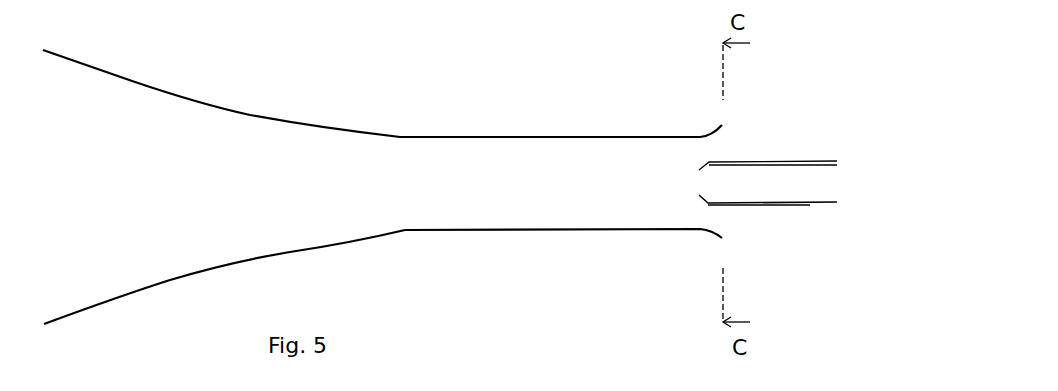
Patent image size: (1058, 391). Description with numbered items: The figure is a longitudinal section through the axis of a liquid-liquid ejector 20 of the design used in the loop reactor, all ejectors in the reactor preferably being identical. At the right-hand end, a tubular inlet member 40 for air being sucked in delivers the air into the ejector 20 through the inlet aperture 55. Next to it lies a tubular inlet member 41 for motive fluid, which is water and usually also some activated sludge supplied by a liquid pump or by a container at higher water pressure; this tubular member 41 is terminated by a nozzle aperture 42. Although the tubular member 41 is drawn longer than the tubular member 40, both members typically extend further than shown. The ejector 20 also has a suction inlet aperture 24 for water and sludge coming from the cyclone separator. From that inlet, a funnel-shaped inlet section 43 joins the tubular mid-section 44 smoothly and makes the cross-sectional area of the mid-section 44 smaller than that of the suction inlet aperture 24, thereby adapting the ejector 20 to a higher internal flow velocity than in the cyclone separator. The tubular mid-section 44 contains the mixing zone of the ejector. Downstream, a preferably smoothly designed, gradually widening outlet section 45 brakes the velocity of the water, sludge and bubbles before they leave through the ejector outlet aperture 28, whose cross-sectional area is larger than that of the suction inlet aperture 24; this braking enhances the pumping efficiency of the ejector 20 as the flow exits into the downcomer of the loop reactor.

The liquid-liquid ejector 20 is at (435, 267).
The suction inlet aperture 24 is at (723, 143).
The ejector outlet aperture 28 is at (43, 188).
The tubular inlet member for air 40 is at (765, 207).
The tubular inlet member for motive fluid 41 is at (827, 203).
The nozzle aperture 42 is at (702, 185).
The funnel-shaped inlet section 43 is at (712, 130).
The tubular mid-section 44 is at (543, 232).
The gradually widening outlet section 45 is at (232, 265).
The inlet aperture 55 is at (698, 163).